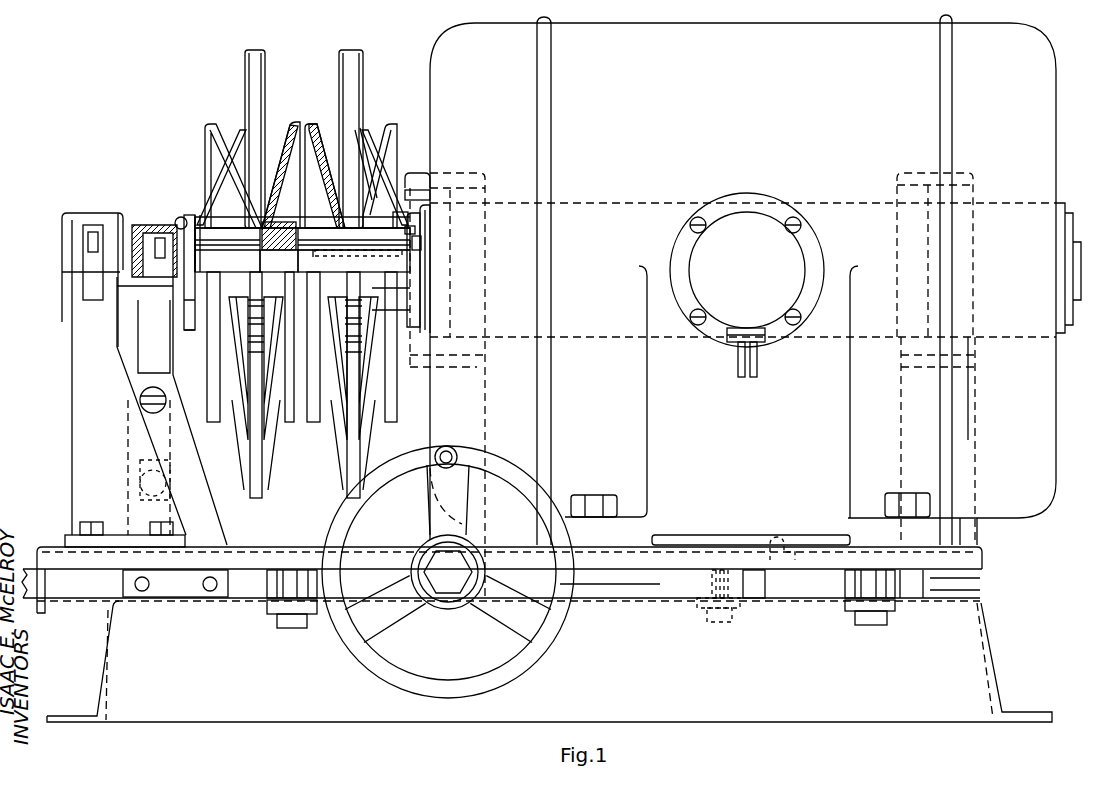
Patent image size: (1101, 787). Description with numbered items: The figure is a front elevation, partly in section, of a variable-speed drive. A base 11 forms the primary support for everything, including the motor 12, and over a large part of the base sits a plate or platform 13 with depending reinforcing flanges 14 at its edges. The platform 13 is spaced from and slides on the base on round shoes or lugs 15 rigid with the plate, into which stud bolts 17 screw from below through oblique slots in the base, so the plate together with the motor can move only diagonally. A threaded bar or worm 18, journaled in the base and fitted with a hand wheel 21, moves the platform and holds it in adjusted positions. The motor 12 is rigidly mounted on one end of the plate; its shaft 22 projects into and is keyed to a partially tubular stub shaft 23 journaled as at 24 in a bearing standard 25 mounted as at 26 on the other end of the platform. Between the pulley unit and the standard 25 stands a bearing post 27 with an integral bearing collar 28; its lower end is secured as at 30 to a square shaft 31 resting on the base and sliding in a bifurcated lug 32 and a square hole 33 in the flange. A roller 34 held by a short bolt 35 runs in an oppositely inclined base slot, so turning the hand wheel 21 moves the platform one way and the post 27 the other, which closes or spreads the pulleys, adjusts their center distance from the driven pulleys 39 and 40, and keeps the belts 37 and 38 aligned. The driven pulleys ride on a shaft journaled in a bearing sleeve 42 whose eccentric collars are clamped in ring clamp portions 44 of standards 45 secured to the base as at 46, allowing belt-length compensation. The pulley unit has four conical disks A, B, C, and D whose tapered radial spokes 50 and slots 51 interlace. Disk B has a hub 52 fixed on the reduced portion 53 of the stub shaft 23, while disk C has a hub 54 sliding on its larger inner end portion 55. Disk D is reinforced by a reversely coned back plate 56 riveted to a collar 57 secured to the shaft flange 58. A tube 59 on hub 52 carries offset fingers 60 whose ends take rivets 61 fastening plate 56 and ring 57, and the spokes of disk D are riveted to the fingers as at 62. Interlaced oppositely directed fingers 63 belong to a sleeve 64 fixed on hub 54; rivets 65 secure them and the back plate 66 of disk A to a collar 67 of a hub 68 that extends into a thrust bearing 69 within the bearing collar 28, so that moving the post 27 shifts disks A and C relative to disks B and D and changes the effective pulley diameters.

The base 11 is at (748, 703).
The motor 12 is at (1010, 513).
The plate or platform 13 is at (628, 547).
The reinforcing flanges 14 is at (673, 569).
The shoes or lugs 15 is at (280, 590).
The stud bolts 17 is at (292, 628).
The threaded bar or worm 18 is at (450, 582).
The hand wheel 21 is at (533, 653).
The motor shaft 22 is at (425, 270).
The stub shaft 23 is at (128, 282).
The journal 24 is at (118, 223).
The bearing standard 25 is at (87, 350).
The mounting 26 is at (83, 528).
The bearing post 27 is at (185, 458).
The bearing collar 28 is at (147, 297).
The securing means 30 is at (210, 593).
The square shaft 31 is at (613, 590).
The bifurcated lug 32 is at (750, 595).
The square hole 33 is at (42, 610).
The lug or roller 34 is at (700, 608).
The short bolt 35 is at (718, 620).
The pulley belt 37 is at (355, 445).
The pulley belt 38 is at (258, 490).
The driven pulley 39 is at (368, 428).
The driven pulley 40 is at (273, 440).
The bearing sleeve 42 is at (828, 327).
The ring clamp portions 44 is at (417, 182).
The standards 45 is at (969, 445).
The securing means 46 is at (943, 577).
The tapered radial spokes 50 is at (413, 190).
The slots 51 is at (380, 288).
The hub of disk B 52 is at (258, 254).
The intermediate reduced portion 53 is at (279, 263).
The hub of disk C 54 is at (307, 255).
The inner end portion 55 is at (390, 260).
The back plate 56 is at (385, 177).
The collar or large washer 57 is at (427, 245).
The integral flange 58 is at (418, 240).
The tube or collar 59 is at (267, 183).
The fingers 60 is at (388, 225).
The rivets 61 is at (413, 230).
The rivet or spot weld 62 is at (358, 160).
The fingers 63 is at (215, 250).
The tube or sleeve 64 is at (313, 257).
The rivets 65 is at (187, 217).
The back plate 66 is at (215, 180).
The collar 67 is at (192, 317).
The hub 68 is at (180, 225).
The thrust bearing 69 is at (157, 230).
The conical disk A is at (248, 186).
The conical disk B is at (295, 123).
The conical disk C is at (312, 123).
The conical disk D is at (393, 123).